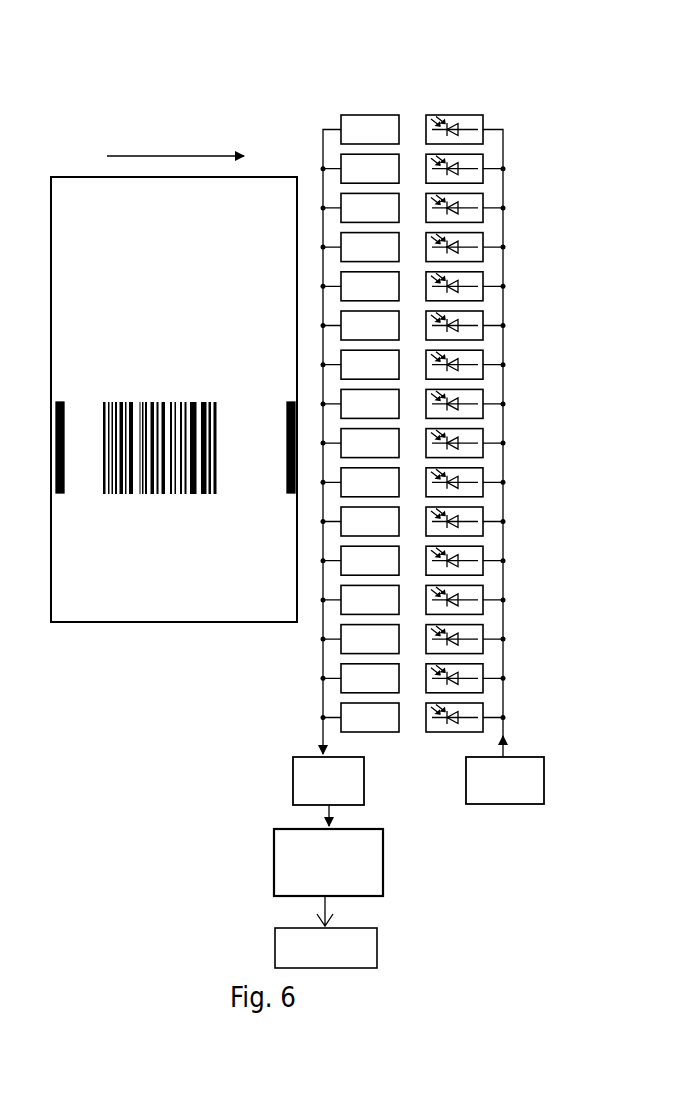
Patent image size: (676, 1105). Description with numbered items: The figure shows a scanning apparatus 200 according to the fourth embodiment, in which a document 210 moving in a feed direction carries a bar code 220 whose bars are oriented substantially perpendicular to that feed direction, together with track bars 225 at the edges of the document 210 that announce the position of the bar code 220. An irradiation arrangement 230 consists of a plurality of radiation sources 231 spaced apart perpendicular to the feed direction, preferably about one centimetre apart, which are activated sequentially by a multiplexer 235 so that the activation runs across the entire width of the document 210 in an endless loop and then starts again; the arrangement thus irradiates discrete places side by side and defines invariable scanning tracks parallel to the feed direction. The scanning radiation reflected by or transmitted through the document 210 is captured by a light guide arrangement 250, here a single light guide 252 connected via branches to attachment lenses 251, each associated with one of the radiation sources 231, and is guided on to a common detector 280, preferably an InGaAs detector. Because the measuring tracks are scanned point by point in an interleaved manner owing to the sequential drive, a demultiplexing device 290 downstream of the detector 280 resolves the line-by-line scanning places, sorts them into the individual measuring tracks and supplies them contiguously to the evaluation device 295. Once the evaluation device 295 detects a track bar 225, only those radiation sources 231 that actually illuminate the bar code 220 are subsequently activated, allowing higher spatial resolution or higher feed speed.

The scanning apparatus 200 is at (128, 75).
The document 210 is at (174, 389).
The bar code 220 is at (201, 400).
The track bar 225 is at (66, 400).
The irradiation arrangement 230 is at (488, 391).
The radiation source 231 is at (484, 120).
The multiplexer 235 is at (505, 780).
The light guide arrangement 250 is at (335, 384).
The attachment lens 251 is at (370, 188).
The light guide 252 is at (322, 148).
The detector 280 is at (328, 781).
The demultiplexing device 290 is at (328, 862).
The evaluation device 295 is at (326, 948).